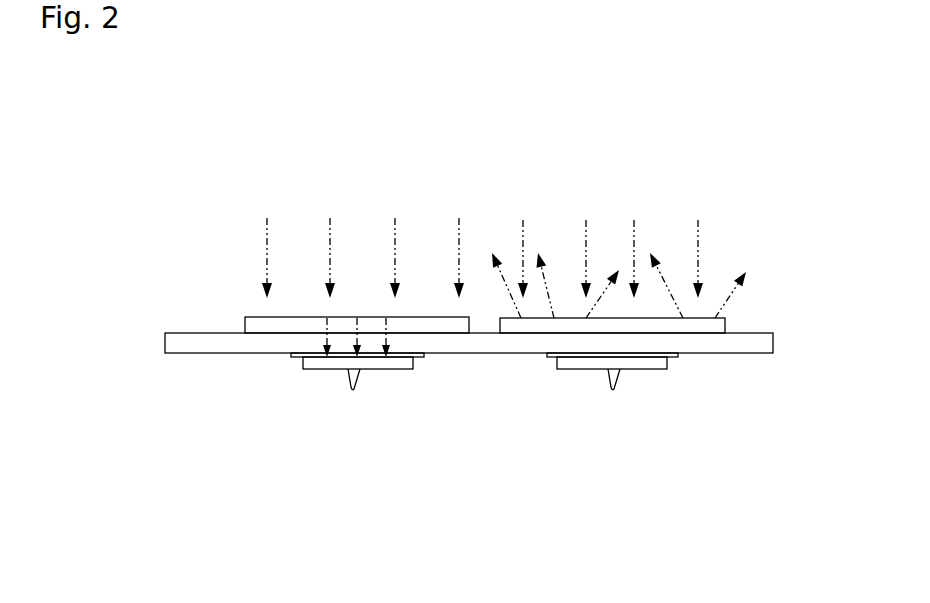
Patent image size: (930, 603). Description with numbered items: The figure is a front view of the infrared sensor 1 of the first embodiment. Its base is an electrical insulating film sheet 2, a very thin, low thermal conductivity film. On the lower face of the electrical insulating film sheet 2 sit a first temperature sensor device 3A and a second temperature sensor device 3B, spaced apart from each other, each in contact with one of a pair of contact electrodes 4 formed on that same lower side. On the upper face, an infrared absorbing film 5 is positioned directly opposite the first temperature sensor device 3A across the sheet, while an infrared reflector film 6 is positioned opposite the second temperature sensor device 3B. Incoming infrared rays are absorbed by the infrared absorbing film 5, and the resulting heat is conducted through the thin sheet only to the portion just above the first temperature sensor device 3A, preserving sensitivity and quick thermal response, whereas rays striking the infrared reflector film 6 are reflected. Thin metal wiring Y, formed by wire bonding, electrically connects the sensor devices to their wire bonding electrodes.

The infrared sensor 1 is at (768, 250).
The electrical insulating film sheet 2 is at (480, 355).
The first temperature sensor device 3A is at (328, 388).
The second temperature sensor device 3B is at (588, 388).
The contact electrodes 4 is at (297, 357).
The infrared absorbing film 5 is at (427, 317).
The infrared reflector film 6 is at (700, 318).
The thin metal wiring Y is at (358, 382).